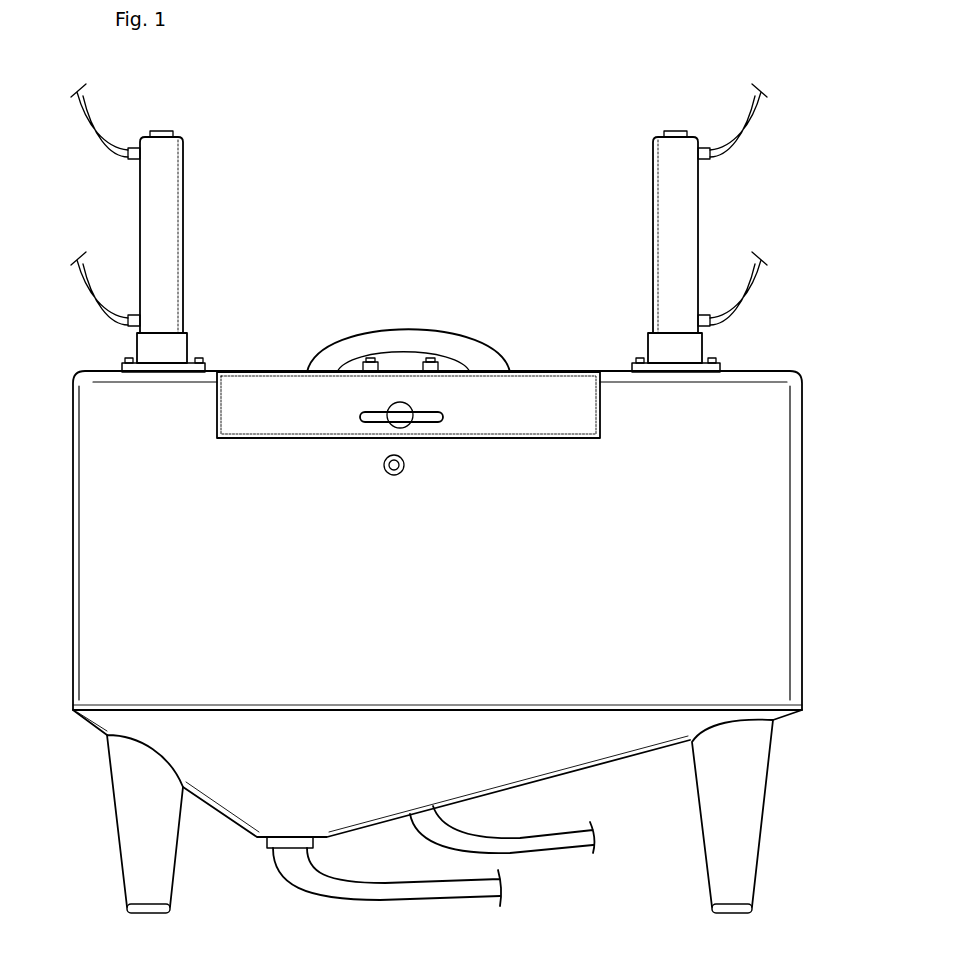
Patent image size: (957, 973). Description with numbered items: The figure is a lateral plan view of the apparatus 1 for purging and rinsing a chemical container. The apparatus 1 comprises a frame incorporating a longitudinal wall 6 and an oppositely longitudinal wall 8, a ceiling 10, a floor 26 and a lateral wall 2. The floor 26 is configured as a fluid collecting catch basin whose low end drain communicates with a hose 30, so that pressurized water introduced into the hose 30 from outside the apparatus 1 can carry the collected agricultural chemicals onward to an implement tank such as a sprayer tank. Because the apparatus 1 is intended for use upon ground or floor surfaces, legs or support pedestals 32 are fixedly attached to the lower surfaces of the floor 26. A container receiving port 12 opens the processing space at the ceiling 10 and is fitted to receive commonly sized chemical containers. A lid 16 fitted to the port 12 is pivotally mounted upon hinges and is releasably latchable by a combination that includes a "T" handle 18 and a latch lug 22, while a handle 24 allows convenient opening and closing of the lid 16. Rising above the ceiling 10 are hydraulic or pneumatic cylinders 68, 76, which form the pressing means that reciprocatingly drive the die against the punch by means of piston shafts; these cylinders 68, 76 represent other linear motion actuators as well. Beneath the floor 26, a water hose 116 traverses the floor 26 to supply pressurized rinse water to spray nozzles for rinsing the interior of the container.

The apparatus for purging and rinsing a chemical container 1 is at (529, 312).
The lateral wall 2 is at (449, 484).
The longitudinal wall 6 is at (71, 558).
The oppositely longitudinal wall 8 is at (802, 487).
The ceiling 10 is at (97, 367).
The container receiving port 12 is at (220, 404).
The lid 16 is at (283, 372).
The "T" handle 18 is at (370, 414).
The latch lug 22 is at (399, 458).
The handle 24 is at (478, 357).
The floor 26 is at (598, 745).
The hose 30 is at (420, 893).
The support pedestals 32 is at (162, 857).
The hydraulic or pneumatic cylinder 68 is at (168, 258).
The hydraulic or pneumatic cylinder 76 is at (678, 233).
The water hose 116 is at (550, 843).